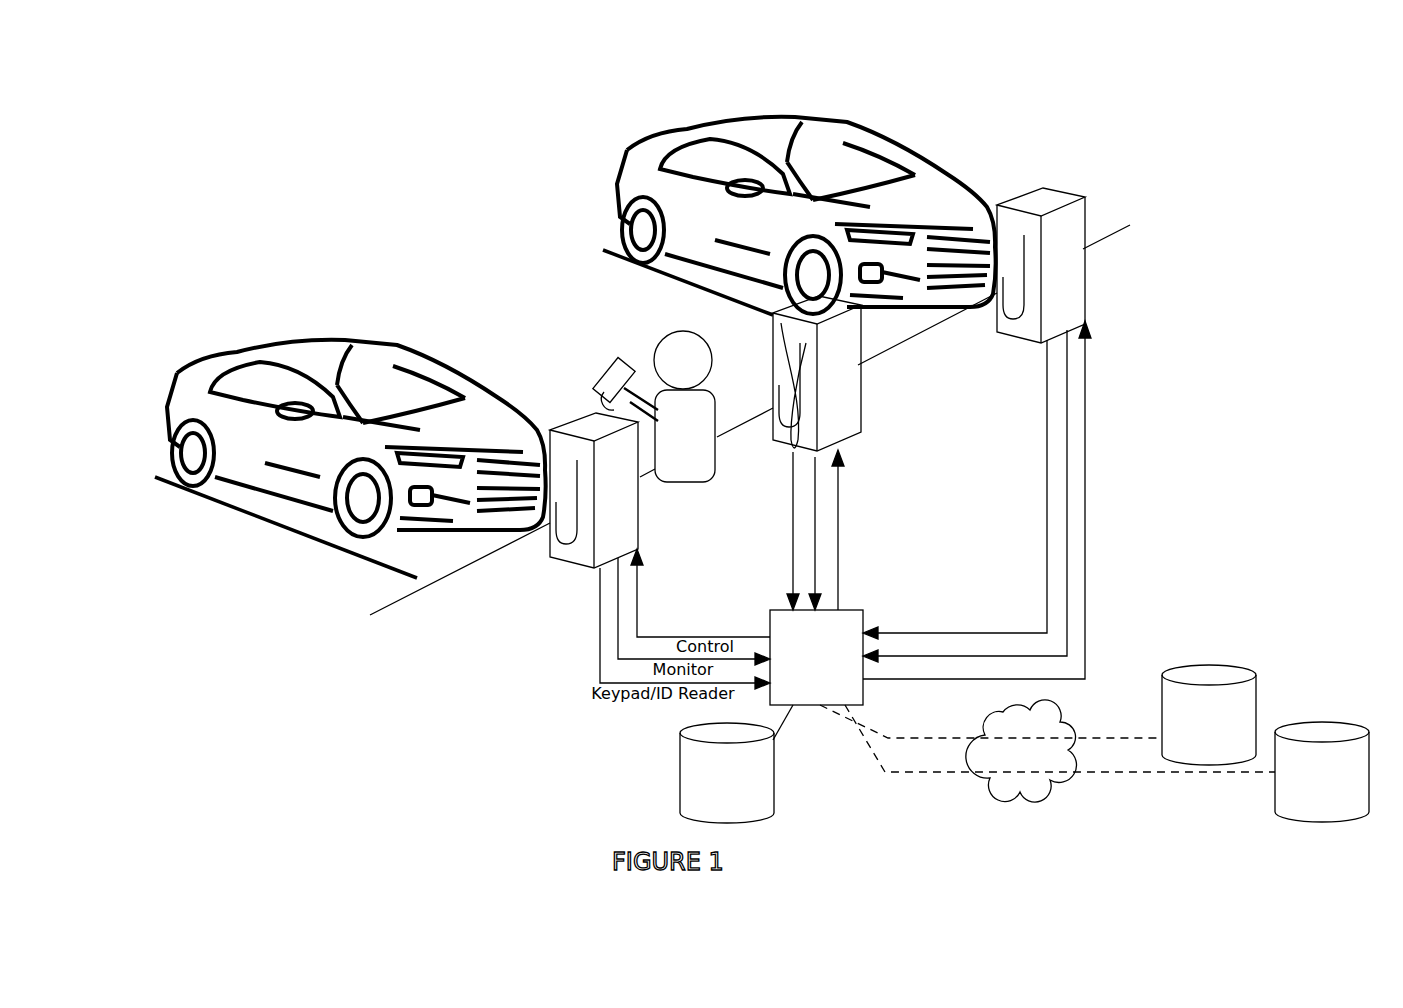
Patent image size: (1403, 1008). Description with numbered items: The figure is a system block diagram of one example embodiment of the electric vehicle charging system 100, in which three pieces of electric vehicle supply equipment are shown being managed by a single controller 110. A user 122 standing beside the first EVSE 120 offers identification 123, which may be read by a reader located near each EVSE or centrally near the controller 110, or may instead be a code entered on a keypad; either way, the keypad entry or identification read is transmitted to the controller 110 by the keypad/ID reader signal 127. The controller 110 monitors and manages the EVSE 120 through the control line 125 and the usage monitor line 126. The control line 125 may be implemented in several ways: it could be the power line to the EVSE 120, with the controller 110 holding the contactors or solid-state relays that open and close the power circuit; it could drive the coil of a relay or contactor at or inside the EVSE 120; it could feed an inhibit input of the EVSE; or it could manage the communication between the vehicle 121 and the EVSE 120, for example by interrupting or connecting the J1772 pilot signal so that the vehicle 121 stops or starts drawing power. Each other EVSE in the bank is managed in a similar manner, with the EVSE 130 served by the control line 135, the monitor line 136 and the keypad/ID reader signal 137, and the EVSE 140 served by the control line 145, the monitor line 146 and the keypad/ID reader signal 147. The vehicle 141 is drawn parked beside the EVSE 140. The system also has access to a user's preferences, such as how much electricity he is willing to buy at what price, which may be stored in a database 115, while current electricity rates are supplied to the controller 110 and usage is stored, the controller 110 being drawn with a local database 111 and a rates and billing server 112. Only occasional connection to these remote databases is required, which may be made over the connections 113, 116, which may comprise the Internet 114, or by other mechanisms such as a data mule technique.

The electric vehicle charging system 100 is at (228, 120).
The controller 110 is at (770, 610).
The database 111 is at (680, 778).
The rates and billing server 112 is at (1225, 666).
The connection 113 is at (1148, 738).
The Internet 114 is at (980, 722).
The database 115 is at (1340, 726).
The connection 116 is at (1155, 773).
The EVSE 120 is at (580, 562).
The vehicle 121 is at (352, 340).
The user 122 is at (662, 335).
The identification 123 is at (598, 372).
The control line 125 is at (637, 603).
The usage monitor line 126 is at (618, 625).
The keypad/ID reader signal 127 is at (600, 645).
The EVSE 130 is at (862, 432).
The control line 135 is at (838, 520).
The monitor line 136 is at (815, 507).
The keypad/ID reader signal 137 is at (793, 492).
The EVSE 140 is at (1025, 340).
The second electric vehicle 141 is at (800, 113).
The control line 145 is at (1085, 475).
The monitor line 146 is at (1067, 495).
The keypad/ID reader signal 147 is at (1047, 517).